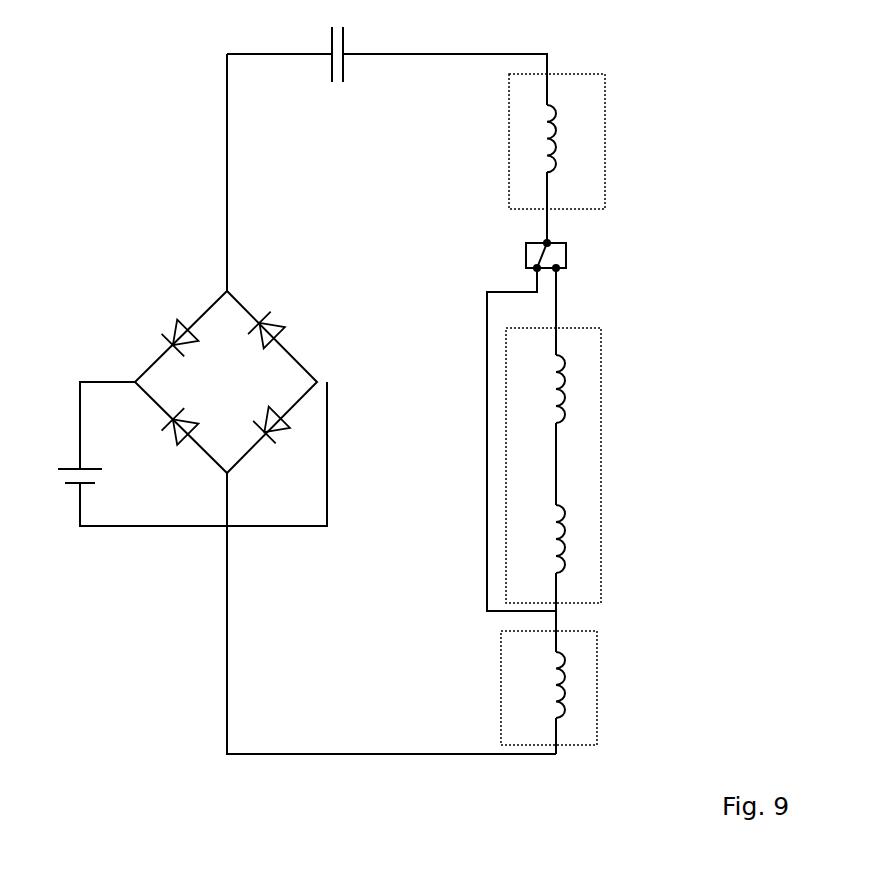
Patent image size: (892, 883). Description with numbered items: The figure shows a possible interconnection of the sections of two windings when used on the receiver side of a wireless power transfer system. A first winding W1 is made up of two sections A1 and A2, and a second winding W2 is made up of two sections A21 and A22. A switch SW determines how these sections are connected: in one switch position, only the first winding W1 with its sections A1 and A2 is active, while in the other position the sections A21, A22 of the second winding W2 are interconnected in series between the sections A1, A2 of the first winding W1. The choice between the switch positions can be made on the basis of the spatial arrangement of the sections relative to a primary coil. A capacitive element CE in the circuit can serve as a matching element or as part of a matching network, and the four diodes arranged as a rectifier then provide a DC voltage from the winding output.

The capacitive element CE is at (343, 53).
The section of the first winding A1 is at (548, 133).
The first winding W1 is at (509, 148).
The switch SW is at (566, 251).
The section of the second winding A21 is at (556, 378).
The second winding W2 is at (601, 463).
The section of the second winding A22 is at (557, 573).
The section of the first winding A2 is at (557, 713).